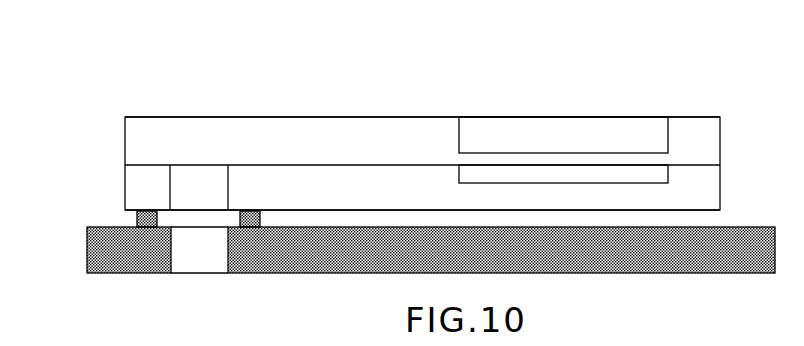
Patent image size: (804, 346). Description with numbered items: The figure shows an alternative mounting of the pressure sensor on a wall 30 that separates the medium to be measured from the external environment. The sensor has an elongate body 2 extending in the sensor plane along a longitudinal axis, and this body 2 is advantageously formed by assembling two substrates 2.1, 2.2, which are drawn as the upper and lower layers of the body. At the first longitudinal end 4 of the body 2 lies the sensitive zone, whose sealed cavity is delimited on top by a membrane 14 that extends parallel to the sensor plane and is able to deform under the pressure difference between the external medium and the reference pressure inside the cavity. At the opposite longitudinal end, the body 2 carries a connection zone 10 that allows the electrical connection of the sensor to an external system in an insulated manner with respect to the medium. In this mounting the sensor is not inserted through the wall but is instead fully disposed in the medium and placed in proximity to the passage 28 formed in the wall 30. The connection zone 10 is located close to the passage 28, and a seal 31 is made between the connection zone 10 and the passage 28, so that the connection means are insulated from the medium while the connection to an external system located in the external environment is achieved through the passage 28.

The body 2 is at (415, 116).
The substrate 2.1 is at (306, 137).
The substrate 2.2 is at (253, 183).
The connection zone 10 is at (195, 182).
The membrane 14 is at (550, 160).
The first longitudinal end 4 is at (652, 116).
The seal 31 is at (135, 217).
The wall 30 is at (278, 258).
The passage 28 is at (192, 260).